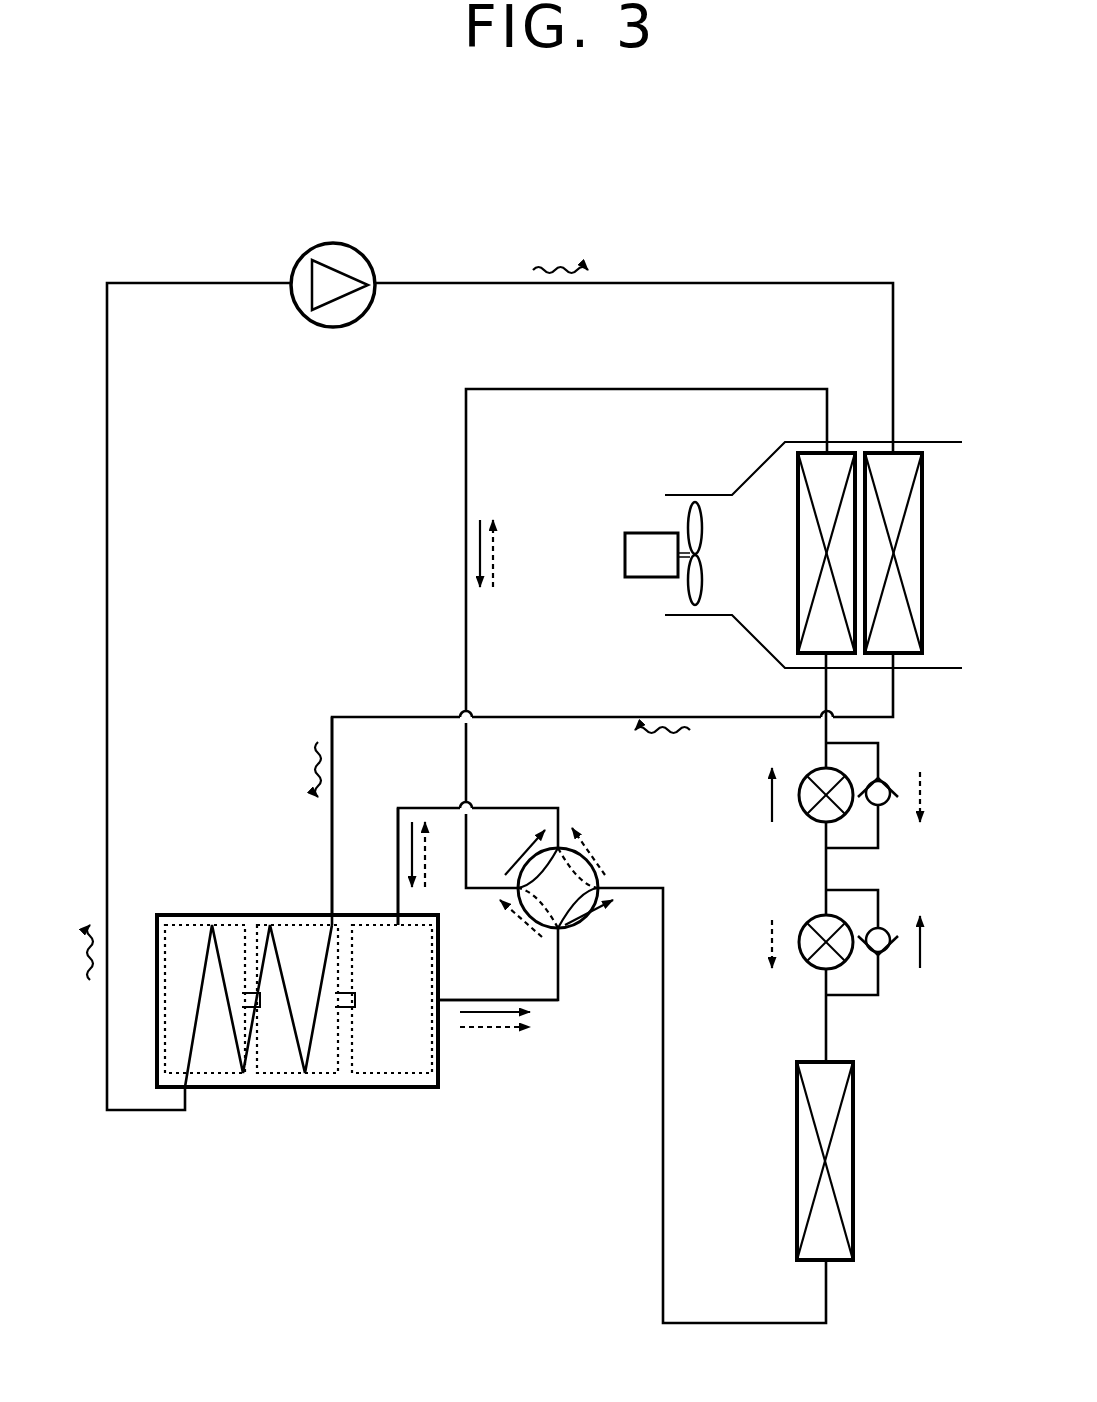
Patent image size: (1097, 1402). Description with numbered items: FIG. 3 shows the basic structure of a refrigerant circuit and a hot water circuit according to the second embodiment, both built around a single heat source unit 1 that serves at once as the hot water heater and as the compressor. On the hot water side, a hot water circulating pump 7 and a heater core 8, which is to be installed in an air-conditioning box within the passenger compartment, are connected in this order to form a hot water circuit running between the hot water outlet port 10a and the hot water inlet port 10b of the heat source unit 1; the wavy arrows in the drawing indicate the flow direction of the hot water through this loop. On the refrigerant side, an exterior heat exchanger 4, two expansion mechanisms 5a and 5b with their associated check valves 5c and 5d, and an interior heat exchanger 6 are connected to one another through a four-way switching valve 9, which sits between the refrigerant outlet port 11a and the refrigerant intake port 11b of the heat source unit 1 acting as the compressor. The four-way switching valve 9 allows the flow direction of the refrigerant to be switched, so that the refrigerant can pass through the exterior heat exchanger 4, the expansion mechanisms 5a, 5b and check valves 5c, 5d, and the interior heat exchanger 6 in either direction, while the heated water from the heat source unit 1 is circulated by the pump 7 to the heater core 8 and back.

The heat source unit 1 is at (200, 915).
The exterior heat exchanger 4 is at (853, 1128).
The expansion mechanism 5a is at (795, 815).
The expansion mechanism 5b is at (795, 962).
The check valve 5c is at (898, 805).
The check valve 5d is at (898, 952).
The interior heat exchanger 6 is at (798, 575).
The hot water circulating pump 7 is at (333, 243).
The heater core 8 is at (922, 575).
The four-way switching valve 9 is at (565, 930).
The hot water outlet port 10a is at (195, 1092).
The hot water inlet port 10b is at (330, 915).
The refrigerant outlet port 11a is at (445, 1003).
The refrigerant intake port 11b is at (398, 915).